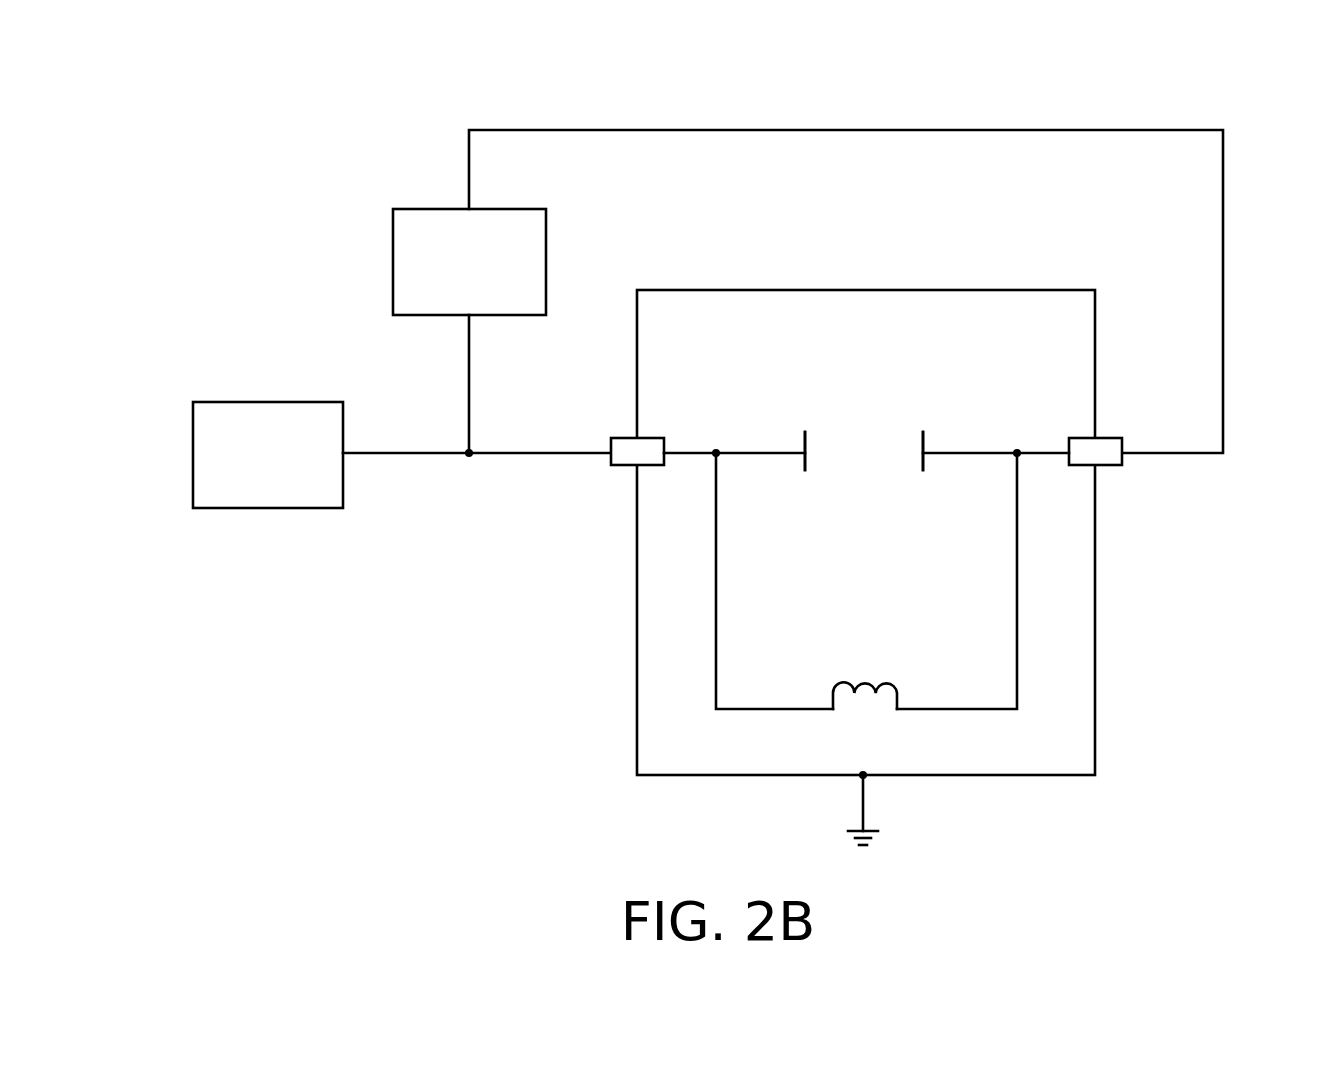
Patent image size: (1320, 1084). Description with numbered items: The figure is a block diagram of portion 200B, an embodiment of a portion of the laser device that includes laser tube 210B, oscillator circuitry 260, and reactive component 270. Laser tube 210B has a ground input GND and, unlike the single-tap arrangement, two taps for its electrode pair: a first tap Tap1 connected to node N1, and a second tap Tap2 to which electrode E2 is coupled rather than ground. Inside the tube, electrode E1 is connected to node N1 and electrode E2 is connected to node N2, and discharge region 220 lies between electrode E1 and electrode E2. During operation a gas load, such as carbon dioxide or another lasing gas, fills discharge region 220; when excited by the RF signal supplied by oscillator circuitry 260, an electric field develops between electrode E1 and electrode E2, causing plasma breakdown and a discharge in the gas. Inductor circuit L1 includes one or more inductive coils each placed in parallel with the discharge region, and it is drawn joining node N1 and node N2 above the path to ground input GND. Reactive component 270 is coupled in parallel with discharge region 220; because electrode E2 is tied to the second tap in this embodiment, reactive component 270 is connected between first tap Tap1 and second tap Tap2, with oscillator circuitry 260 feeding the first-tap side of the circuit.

The portion 200B is at (680, 78).
The laser tube 210B is at (870, 289).
The discharge region 220 is at (867, 407).
The oscillator circuitry 260 is at (285, 499).
The reactive component 270 is at (486, 308).
The first tap Tap1 is at (620, 438).
The second tap Tap2 is at (1118, 438).
The node N1 is at (715, 452).
The node N2 is at (1018, 450).
The electrode E1 is at (805, 453).
The electrode E2 is at (926, 453).
The inductor circuit L1 is at (865, 683).
The ground input GND is at (866, 797).